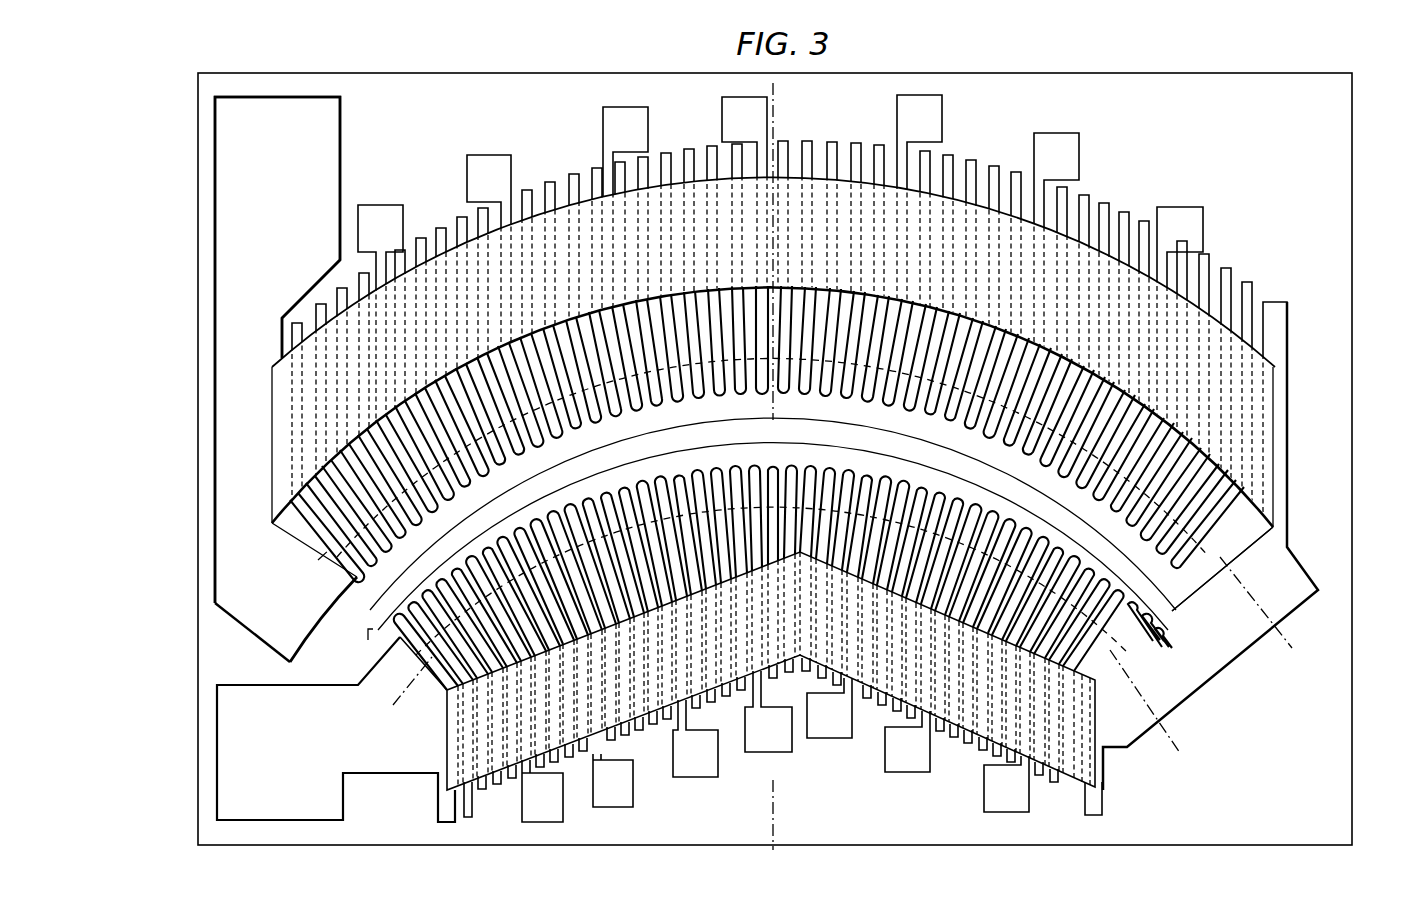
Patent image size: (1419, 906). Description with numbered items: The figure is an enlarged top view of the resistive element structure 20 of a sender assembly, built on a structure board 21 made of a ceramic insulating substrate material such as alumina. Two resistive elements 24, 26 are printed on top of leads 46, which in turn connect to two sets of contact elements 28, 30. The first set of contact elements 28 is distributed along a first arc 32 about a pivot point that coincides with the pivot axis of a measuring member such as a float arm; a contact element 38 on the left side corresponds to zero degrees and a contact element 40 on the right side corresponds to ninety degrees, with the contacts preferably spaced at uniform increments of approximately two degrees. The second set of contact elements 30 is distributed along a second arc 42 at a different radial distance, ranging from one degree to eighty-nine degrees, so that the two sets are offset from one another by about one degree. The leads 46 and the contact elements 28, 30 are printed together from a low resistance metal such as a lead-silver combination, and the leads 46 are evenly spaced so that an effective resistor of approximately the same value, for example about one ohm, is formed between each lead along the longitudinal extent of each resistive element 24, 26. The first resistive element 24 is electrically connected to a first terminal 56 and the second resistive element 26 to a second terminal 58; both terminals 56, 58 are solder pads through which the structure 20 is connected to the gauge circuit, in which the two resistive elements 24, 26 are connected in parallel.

The resistive element structure 20 is at (1366, 248).
The structure board 21 is at (1296, 137).
The first resistive element 24 is at (1092, 704).
The second resistive element 26 is at (1280, 384).
The first set of contact elements 28 is at (375, 613).
The second set of contact elements 30 is at (1150, 580).
The first arc 32 is at (1172, 752).
The contact element 38 is at (374, 637).
The contact element 40 is at (1152, 633).
The second arc 42 is at (1293, 650).
The leads 46 is at (550, 172).
The first terminal 56 is at (237, 685).
The second terminal 58 is at (343, 133).